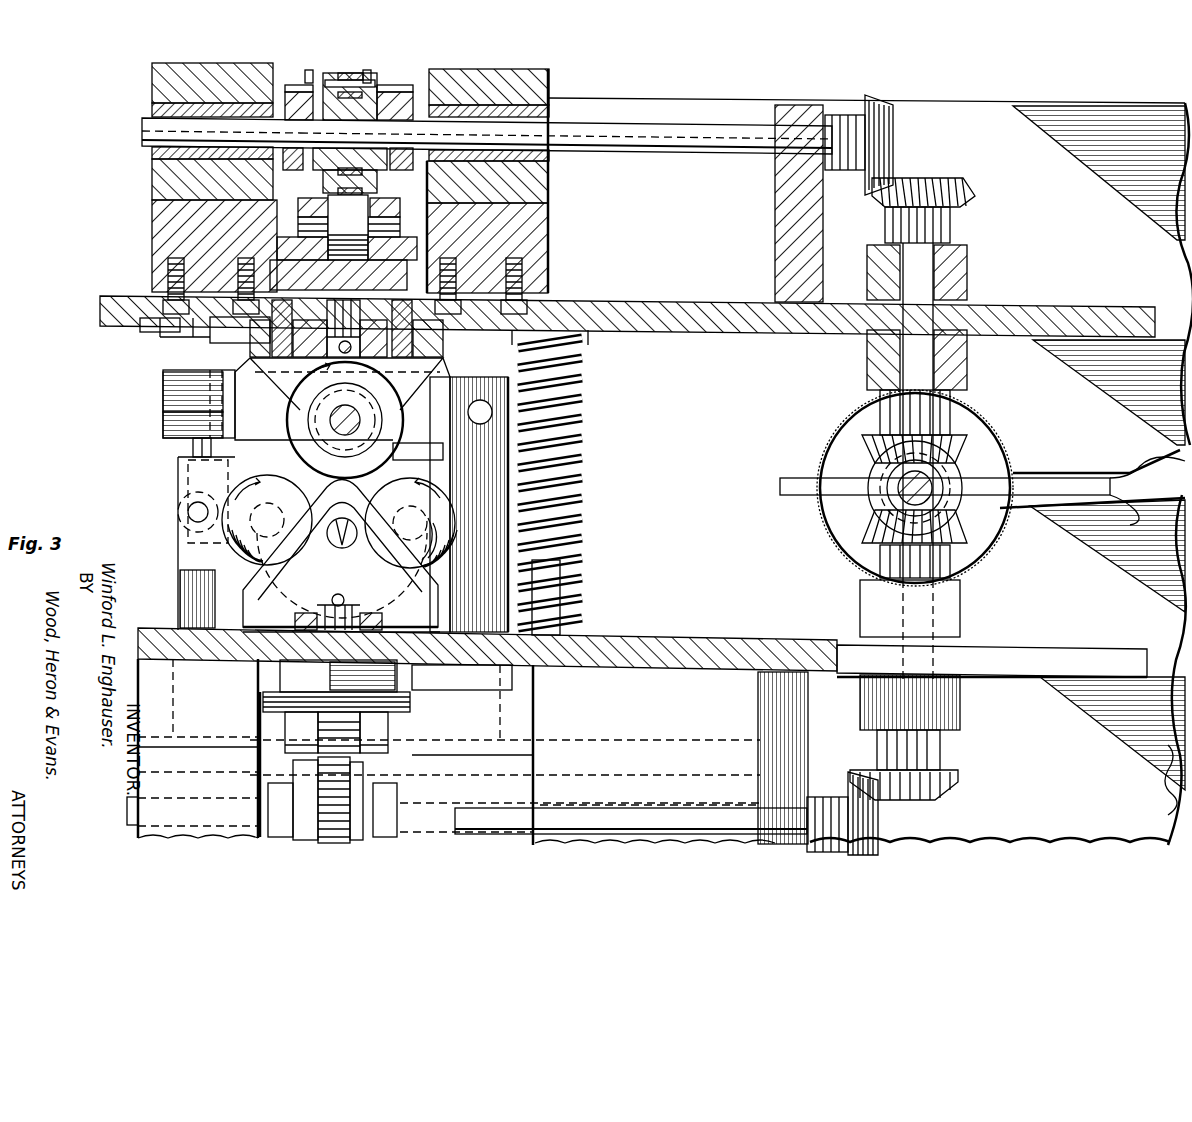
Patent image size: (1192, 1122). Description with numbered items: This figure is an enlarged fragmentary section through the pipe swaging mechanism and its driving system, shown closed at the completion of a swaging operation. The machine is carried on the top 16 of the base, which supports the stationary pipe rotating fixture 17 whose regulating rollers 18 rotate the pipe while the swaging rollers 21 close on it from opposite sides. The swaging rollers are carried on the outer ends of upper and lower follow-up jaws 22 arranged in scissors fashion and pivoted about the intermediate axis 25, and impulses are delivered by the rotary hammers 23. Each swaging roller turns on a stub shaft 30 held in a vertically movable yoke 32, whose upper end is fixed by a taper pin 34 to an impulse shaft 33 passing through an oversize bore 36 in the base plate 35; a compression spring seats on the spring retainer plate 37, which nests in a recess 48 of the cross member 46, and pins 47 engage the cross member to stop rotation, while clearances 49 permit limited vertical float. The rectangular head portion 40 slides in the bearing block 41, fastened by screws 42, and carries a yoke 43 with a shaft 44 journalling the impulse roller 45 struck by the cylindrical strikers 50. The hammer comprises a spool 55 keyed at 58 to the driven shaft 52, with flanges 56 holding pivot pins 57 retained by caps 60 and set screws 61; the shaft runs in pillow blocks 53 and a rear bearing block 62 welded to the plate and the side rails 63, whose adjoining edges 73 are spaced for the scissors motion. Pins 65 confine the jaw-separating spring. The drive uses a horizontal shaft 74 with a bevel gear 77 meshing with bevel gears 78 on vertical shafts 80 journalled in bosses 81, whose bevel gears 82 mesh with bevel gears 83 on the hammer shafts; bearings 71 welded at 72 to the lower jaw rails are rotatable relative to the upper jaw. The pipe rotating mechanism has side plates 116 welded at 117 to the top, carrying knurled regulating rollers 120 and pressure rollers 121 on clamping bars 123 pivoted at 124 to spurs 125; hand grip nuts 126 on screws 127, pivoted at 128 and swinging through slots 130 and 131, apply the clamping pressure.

The top 16 is at (1168, 750).
The pipe rotating fixture 17 is at (171, 576).
The regulating rollers 18 is at (242, 567).
The swaging rollers 21 is at (288, 456).
The follow-up jaws 22 is at (1122, 122).
The rotary hammers 23 is at (312, 80).
The intermediate axis 25 is at (944, 484).
The stub shaft 30 is at (330, 422).
The yoke 32 is at (284, 396).
The impulse shaft 33 is at (342, 333).
The taper pin 34 is at (338, 354).
The base plate 35 is at (654, 297).
The bore 36 is at (423, 678).
The spring retainer plate 37 is at (438, 378).
The rectangular head portion 40 is at (300, 260).
The bearing block 41 is at (157, 222).
The screws 42 is at (166, 298).
The yoke 43 is at (302, 208).
The shaft 44 is at (383, 220).
The impulse roller 45 is at (373, 198).
The cross member 46 is at (446, 356).
The pins 47 is at (443, 337).
The recess 48 is at (383, 400).
The clearances 49 is at (438, 630).
The strikers 50 is at (348, 73).
The driven shaft 52 is at (664, 130).
The pillow blocks 53 is at (206, 64).
The spool 55 is at (404, 100).
The flanges 56 is at (310, 74).
The pivot pins 57 is at (402, 86).
The key 58 is at (331, 127).
The caps 60 is at (300, 98).
The set screws 61 is at (276, 138).
The bearing block 62 is at (775, 200).
The side rails 63 is at (748, 99).
The pins 65 is at (585, 351).
The bearings 71 is at (998, 531).
The weld 72 is at (850, 565).
The adjoining edges 73 is at (1138, 478).
The horizontal shaft 74 is at (902, 490).
The bevel gear 77 is at (869, 476).
The bevel gears 78 is at (958, 446).
The vertical shafts 80 is at (876, 350).
The bosses 81 is at (968, 272).
The bevel gears 82 is at (963, 188).
The bevel gears 83 is at (896, 144).
The side plates 116 is at (180, 598).
The weld 117 is at (170, 625).
The knurled regulating rollers 120 is at (262, 574).
The pressure rollers 121 is at (391, 453).
The clamping bars 123 is at (170, 418).
The pivot 124 is at (492, 408).
The spurs 125 is at (483, 496).
The hand grip nuts 126 is at (140, 325).
The screws 127 is at (193, 446).
The pivot 128 is at (188, 508).
The slot 130 is at (170, 388).
The slot 131 is at (188, 480).